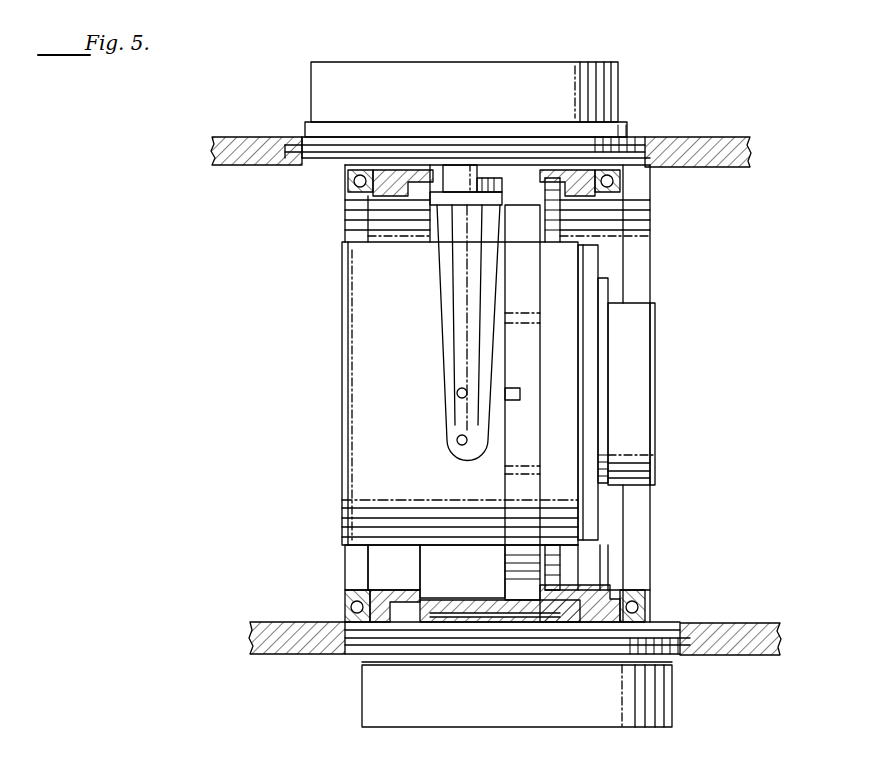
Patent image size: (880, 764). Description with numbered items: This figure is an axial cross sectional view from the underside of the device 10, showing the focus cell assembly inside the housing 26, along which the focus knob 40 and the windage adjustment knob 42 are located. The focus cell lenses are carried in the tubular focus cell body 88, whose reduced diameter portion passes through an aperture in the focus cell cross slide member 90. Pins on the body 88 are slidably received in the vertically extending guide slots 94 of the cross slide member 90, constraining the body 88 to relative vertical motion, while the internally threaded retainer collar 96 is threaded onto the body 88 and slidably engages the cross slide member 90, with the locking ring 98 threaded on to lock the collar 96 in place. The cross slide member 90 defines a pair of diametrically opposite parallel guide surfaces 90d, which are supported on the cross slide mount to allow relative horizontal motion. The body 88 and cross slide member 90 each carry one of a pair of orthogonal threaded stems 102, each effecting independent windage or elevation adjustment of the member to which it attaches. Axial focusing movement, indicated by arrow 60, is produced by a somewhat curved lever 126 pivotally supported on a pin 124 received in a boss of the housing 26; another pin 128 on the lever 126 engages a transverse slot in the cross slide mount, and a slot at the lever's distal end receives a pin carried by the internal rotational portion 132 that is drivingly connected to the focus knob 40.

The device 10 is at (683, 90).
The housing 26 is at (722, 165).
The focus knob 40 is at (622, 76).
The windage adjustment knob 42 is at (665, 712).
The arrow 60 is at (424, 393).
The focus cell body 88 is at (355, 485).
The focus cell cross slide member 90 is at (548, 527).
The guide surfaces 90d is at (533, 432).
The guide slots 94 is at (518, 392).
The retainer collar 96 is at (578, 262).
The locking ring 98 is at (598, 292).
The threaded stems 102 is at (503, 598).
The pin 124 is at (457, 444).
The lever 126 is at (445, 303).
The pin 128 is at (456, 392).
The internal rotational portion 132 is at (430, 245).